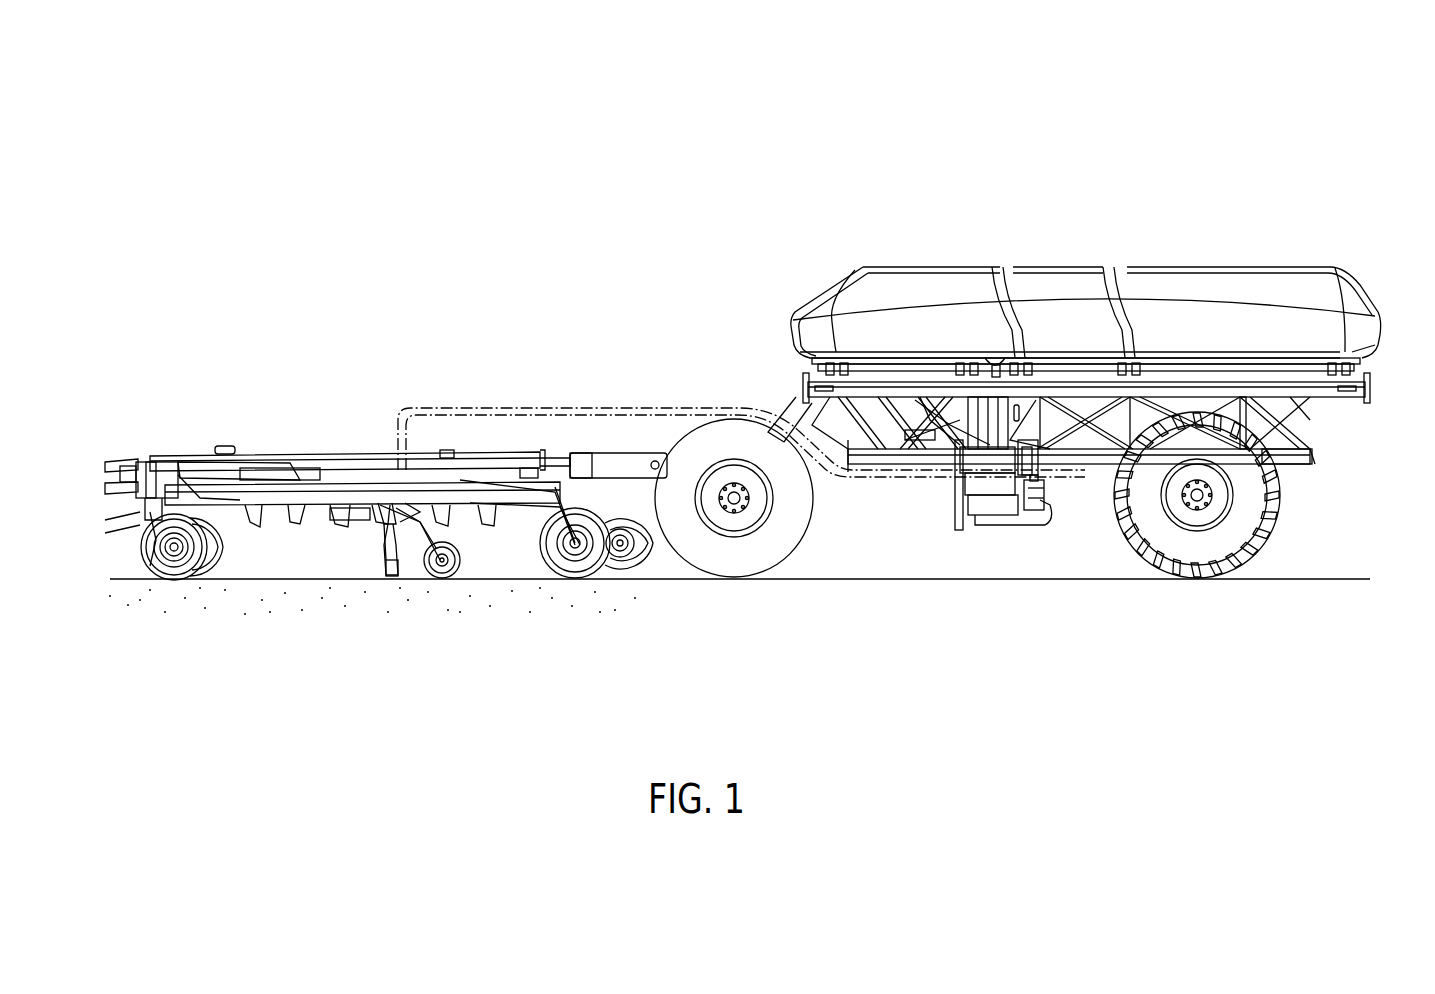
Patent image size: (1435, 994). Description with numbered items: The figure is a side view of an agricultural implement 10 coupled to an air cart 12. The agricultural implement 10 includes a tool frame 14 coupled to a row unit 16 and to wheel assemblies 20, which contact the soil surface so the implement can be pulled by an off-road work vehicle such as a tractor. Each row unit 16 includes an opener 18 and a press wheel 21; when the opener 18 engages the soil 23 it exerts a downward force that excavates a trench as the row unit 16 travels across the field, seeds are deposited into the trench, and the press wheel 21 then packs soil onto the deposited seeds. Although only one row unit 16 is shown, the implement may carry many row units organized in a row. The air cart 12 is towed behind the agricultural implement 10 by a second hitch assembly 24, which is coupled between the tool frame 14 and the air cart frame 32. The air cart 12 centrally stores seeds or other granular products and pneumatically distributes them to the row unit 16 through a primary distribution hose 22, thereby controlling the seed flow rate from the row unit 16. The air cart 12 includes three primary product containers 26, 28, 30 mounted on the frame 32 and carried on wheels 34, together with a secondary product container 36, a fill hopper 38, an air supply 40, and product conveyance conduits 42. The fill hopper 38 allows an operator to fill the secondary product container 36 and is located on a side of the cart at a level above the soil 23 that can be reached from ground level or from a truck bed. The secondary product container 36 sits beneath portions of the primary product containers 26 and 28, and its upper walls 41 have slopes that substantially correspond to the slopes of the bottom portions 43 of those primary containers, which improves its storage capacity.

The agricultural implement 10 is at (328, 402).
The air cart 12 is at (1090, 216).
The tool frame 14 is at (374, 470).
The row unit 16 is at (368, 571).
The opener 18 is at (388, 580).
The wheel assemblies 20 is at (178, 580).
The press wheel 21 is at (455, 562).
The primary distribution hose 22 is at (452, 408).
The soil 23 is at (488, 580).
The second hitch assembly 24 is at (562, 452).
The primary product container 26 is at (928, 268).
The primary product container 28 is at (1057, 268).
The primary product container 30 is at (1238, 268).
The frame 32 is at (1320, 440).
The wheels 34 is at (792, 528).
The secondary product container 36 is at (935, 447).
The fill hopper 38 is at (1000, 470).
The air supply 40 is at (1035, 496).
The upper walls 41 is at (1020, 360).
The product conveyance conduits 42 is at (982, 450).
The bottom portions 43 is at (938, 425).